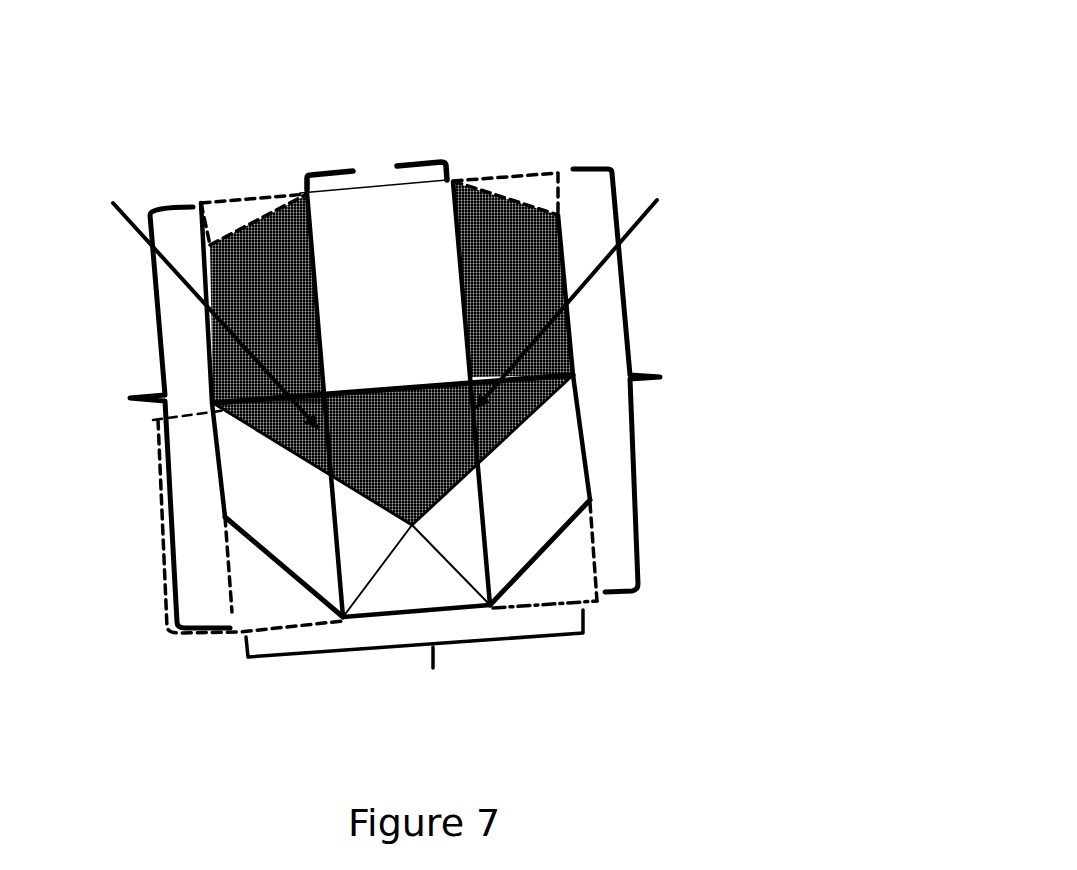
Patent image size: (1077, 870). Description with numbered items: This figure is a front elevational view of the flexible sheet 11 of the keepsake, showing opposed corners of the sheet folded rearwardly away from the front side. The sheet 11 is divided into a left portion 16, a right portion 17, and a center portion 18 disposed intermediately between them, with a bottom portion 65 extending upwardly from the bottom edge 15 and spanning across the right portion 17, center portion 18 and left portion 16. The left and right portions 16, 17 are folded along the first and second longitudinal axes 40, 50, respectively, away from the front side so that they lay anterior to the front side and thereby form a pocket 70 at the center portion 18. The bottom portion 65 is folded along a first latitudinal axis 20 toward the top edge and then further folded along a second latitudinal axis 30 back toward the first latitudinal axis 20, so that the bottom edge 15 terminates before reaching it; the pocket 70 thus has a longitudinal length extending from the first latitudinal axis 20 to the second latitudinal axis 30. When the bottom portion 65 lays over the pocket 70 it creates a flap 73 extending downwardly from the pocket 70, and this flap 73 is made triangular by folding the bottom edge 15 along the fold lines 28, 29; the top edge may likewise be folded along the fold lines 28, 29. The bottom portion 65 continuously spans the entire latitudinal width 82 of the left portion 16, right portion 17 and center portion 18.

The flexible sheet 11 is at (690, 100).
The bottom edge 15 is at (412, 525).
The left portion 16 is at (205, 411).
The right portion 17 is at (608, 387).
The center portion 18 is at (395, 386).
The first latitudinal axis 20 is at (470, 612).
The fold line 28 is at (137, 617).
The fold line 29 is at (683, 548).
The second latitudinal axis 30 is at (480, 388).
The first longitudinal axis 40 is at (176, 283).
The second longitudinal axis 50 is at (670, 277).
The bottom portion 65 is at (158, 522).
The pocket 70 is at (423, 373).
The flap 73 is at (423, 455).
The latitudinal width 82 is at (414, 660).